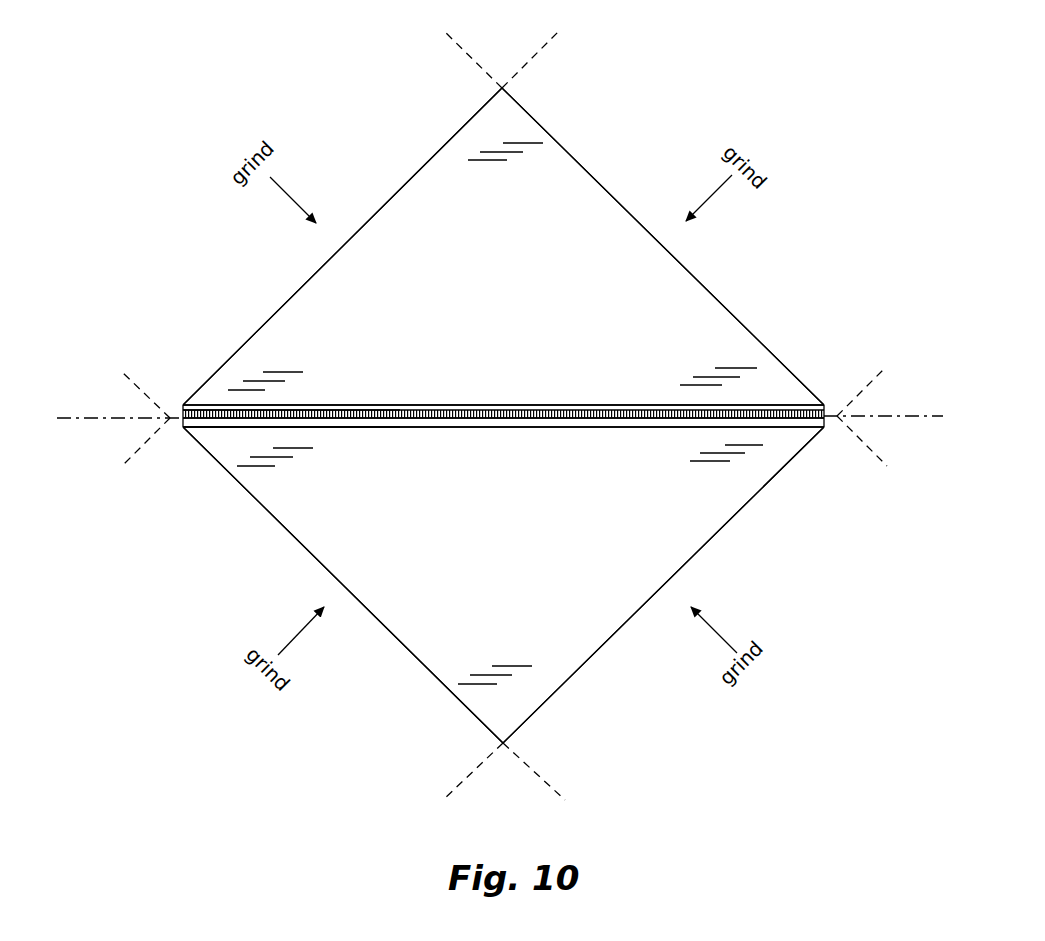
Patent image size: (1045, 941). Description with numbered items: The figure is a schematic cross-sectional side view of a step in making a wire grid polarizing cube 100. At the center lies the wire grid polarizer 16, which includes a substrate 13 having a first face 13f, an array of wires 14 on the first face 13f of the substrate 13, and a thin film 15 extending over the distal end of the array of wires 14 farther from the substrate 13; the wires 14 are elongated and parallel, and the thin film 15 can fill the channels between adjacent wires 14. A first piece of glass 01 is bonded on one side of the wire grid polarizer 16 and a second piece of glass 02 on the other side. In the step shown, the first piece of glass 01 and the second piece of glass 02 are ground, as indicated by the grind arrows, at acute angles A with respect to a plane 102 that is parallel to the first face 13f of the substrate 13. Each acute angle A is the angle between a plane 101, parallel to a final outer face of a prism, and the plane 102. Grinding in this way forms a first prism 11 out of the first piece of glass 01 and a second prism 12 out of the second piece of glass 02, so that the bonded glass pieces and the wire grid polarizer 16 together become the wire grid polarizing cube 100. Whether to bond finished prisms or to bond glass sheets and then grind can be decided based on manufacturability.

The wire grid polarizing cube 100 is at (190, 64).
The plane 101 is at (509, 419).
The plane 102 is at (60, 422).
The first piece of glass 01 is at (374, 291).
The second piece of glass 02 is at (377, 556).
The first prism 11 is at (517, 291).
The second prism 12 is at (514, 556).
The substrate 13 is at (545, 420).
The first face 13f is at (392, 420).
The array of wires 14 is at (550, 416).
The thin film 15 is at (562, 409).
The wire grid polarizer 16 is at (379, 415).